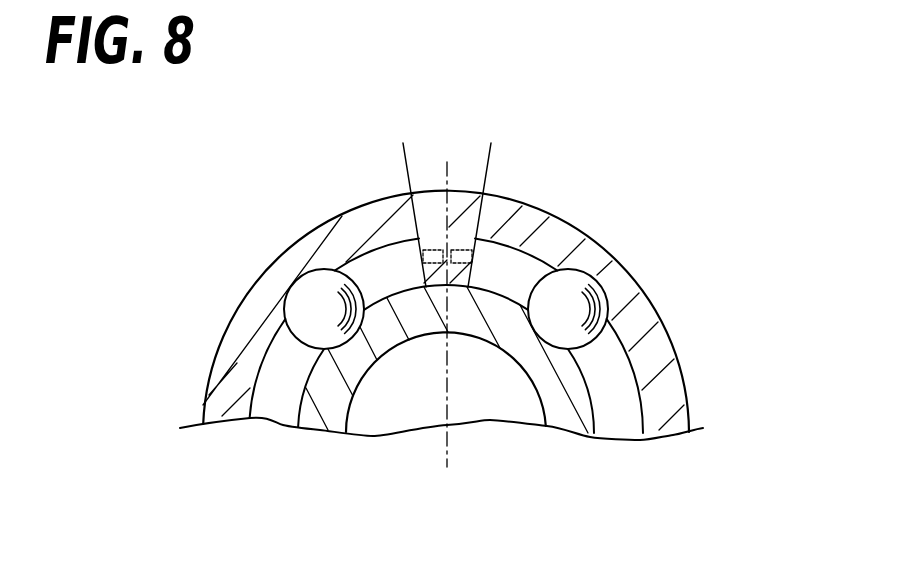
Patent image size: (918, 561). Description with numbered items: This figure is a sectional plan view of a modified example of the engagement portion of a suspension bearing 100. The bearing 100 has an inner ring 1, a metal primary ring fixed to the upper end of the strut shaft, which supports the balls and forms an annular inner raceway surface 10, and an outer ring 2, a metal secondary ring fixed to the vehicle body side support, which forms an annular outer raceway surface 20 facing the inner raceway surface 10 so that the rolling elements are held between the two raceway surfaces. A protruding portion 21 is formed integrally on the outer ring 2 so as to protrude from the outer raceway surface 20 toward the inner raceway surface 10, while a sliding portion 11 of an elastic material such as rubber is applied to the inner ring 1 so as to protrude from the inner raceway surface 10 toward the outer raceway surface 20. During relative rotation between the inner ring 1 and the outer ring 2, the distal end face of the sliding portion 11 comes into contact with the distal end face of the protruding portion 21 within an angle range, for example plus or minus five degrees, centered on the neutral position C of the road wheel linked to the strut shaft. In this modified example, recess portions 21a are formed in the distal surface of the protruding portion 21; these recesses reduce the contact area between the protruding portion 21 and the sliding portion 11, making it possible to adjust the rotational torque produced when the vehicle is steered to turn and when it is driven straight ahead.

The bearing 100 is at (655, 203).
The inner ring 1 is at (315, 406).
The inner raceway surface 10 is at (320, 368).
The sliding portion 11 is at (417, 250).
The outer ring 2 is at (666, 393).
The outer raceway surface 20 is at (628, 358).
The protruding portion 21 is at (477, 242).
The recess portions 21a is at (423, 257).
The neutral position C is at (447, 454).